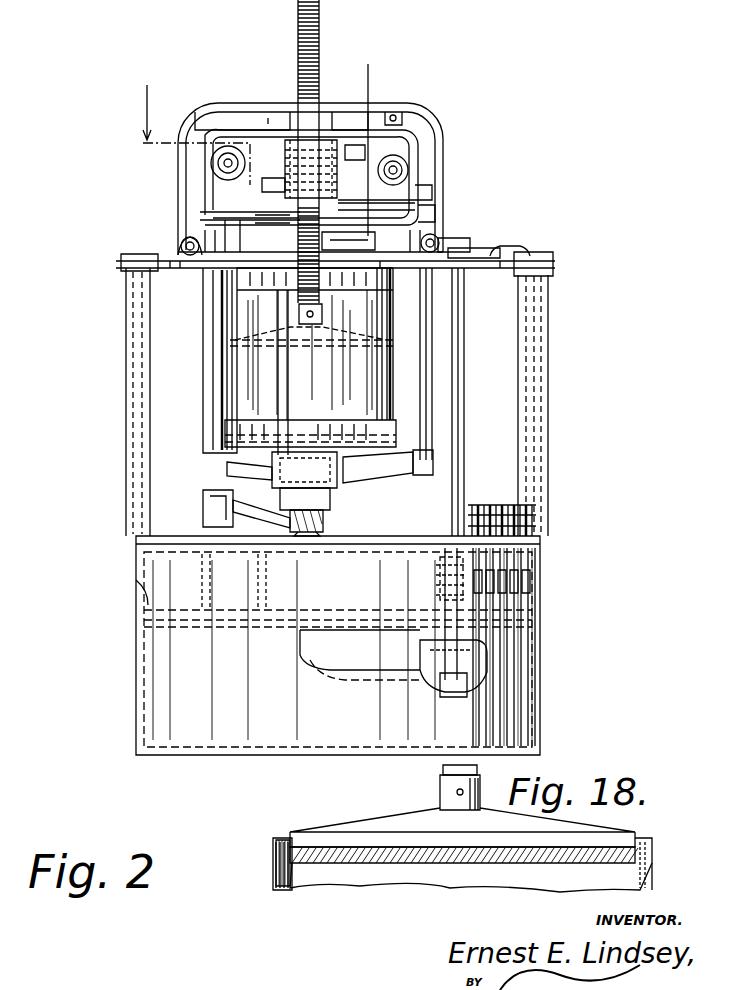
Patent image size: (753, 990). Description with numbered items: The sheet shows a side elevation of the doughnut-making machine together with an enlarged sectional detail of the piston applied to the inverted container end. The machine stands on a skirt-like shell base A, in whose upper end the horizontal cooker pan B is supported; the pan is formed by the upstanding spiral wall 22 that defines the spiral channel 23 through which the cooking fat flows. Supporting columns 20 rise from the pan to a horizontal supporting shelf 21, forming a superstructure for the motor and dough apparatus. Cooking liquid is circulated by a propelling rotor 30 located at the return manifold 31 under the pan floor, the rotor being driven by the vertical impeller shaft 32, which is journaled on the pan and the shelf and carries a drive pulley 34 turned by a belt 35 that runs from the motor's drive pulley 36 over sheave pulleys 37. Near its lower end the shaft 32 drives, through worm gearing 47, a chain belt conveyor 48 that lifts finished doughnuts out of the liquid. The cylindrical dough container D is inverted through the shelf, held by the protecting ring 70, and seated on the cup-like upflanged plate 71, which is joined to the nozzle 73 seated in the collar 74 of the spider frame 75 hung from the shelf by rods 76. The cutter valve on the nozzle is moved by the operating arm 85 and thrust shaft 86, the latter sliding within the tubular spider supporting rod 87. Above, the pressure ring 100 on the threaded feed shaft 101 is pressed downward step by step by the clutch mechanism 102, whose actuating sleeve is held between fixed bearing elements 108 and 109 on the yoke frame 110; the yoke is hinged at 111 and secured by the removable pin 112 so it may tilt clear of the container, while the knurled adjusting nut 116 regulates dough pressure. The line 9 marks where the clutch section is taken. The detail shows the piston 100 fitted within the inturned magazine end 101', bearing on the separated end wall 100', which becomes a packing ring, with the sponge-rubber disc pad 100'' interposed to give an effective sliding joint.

In FIG. 2, the feed shaft 101 is at (263, 162).
In FIG. 18, the feed shaft 101 is at (425, 786).
In FIG. 2, the section line 9 is at (257, 137).
In FIG. 2, the upper yoke frame 110 is at (440, 142).
In FIG. 2, the fixed bearing element 108 is at (255, 112).
In FIG. 2, the clutch mechanism 102 is at (300, 182).
In FIG. 2, the knurled adjusting nut 116 is at (210, 165).
In FIG. 2, the drive pulley 36 is at (432, 190).
In FIG. 2, the sheave pulleys 37 is at (432, 212).
In FIG. 2, the hinge 111 is at (452, 245).
In FIG. 2, the drive pulley 34 is at (472, 245).
In FIG. 2, the belt 35 is at (520, 255).
In FIG. 2, the fixed bearing element 109 is at (210, 210).
In FIG. 2, the removable pin 112 is at (182, 245).
In FIG. 2, the supporting shelf 21 is at (515, 258).
In FIG. 2, the supporting columns 20 is at (128, 432).
In FIG. 2, the rods 76 is at (432, 320).
In FIG. 2, the container D is at (392, 380).
In FIG. 18, the container D is at (652, 868).
In FIG. 2, the tubular spider supporting rod 87 is at (205, 365).
In FIG. 2, the ring 70 is at (243, 278).
In FIG. 2, the pressure ring 100 is at (230, 341).
In FIG. 18, the pressure ring 100 is at (462, 822).
In FIG. 2, the upflanged plate 71 is at (235, 437).
In FIG. 2, the impeller shaft 32 is at (462, 480).
In FIG. 2, the spider frame 75 is at (400, 462).
In FIG. 2, the collar 74 is at (330, 480).
In FIG. 2, the nozzle 73 is at (330, 505).
In FIG. 2, the thrust shaft 86 is at (210, 482).
In FIG. 2, the operating arm 85 is at (230, 510).
In FIG. 2, the chain belt conveyor 48 is at (535, 518).
In FIG. 2, the shell base A is at (136, 672).
In FIG. 2, the cooker pan B is at (140, 605).
In FIG. 2, the spiral channel 23 is at (230, 590).
In FIG. 2, the upstanding wall 22 is at (258, 598).
In FIG. 2, the worm gearing 47 is at (445, 582).
In FIG. 2, the propelling rotor 30 is at (492, 658).
In FIG. 2, the return manifold 31 is at (355, 668).
In FIG. 18, the inturned magazine end 101' is at (277, 841).
In FIG. 18, the end wall 100' is at (464, 887).
In FIG. 18, the disc pad 100'' is at (313, 880).